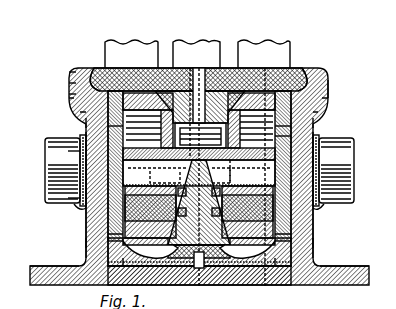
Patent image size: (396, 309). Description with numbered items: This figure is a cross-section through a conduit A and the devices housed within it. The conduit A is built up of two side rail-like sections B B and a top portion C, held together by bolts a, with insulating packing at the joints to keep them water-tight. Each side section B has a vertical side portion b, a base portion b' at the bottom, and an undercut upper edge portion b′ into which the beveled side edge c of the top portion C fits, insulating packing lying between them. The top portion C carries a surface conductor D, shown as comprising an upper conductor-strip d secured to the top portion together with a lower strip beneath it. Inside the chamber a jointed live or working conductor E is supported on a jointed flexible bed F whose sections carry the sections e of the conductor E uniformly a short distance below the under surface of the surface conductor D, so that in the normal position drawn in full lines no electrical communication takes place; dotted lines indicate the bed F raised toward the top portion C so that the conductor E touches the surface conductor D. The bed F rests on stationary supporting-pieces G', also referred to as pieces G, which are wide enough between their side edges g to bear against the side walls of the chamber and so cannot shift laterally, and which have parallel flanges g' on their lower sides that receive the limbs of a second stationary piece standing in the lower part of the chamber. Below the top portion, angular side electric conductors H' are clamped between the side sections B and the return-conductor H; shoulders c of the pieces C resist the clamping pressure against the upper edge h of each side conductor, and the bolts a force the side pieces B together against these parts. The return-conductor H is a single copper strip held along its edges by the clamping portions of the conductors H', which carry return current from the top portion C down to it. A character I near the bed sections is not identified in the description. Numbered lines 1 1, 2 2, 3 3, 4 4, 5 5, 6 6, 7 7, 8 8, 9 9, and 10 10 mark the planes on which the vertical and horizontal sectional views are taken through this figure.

The vertical side portion b is at (199, 176).
The base portion b' is at (199, 258).
The undercut upper edge portion b′ is at (68, 64).
The side rail-like section B is at (78, 120).
The top portion C is at (84, 72).
The bevel c is at (199, 128).
The surface conductor D is at (214, 90).
The upper side conductor-strip d is at (170, 90).
The jointed live or working electric conductor E is at (283, 118).
The jointed bed F is at (100, 120).
The stationary supporting-piece G is at (331, 134).
The stationary supporting-piece G' is at (243, 172).
The side edge g is at (199, 172).
The parallel flange g' is at (179, 173).
The return-conductor H is at (199, 280).
The side electric conductor H' is at (199, 252).
The edge h is at (78, 114).
The die block I is at (199, 212).
The section of working conductor e is at (199, 202).
The bolt a is at (37, 158).
The conduit A is at (74, 200).
The section line 1 1 is at (262, 180).
The section line 2 2 is at (192, 298).
The section line 3 3 is at (182, 292).
The section line 4 4 is at (78, 234).
The section line 5 5 is at (60, 190).
The section line 6 6 is at (60, 143).
The section line 7 7 is at (72, 103).
The section line 8 8 is at (61, 86).
The section line 9 9 is at (61, 75).
The section line 10 10 is at (61, 64).